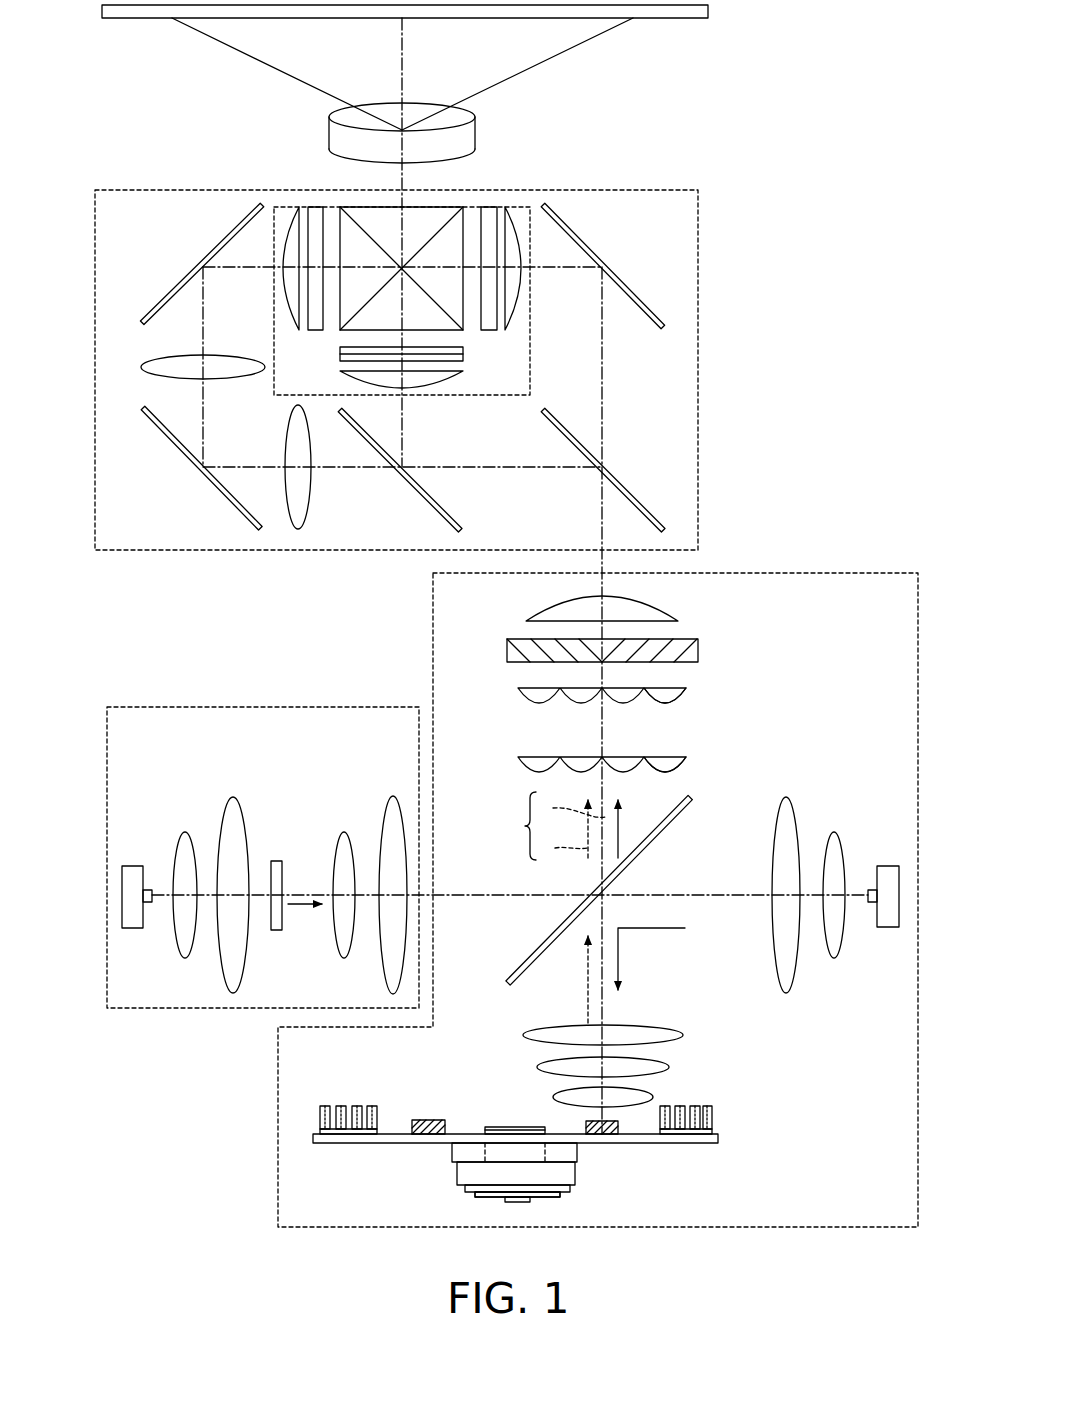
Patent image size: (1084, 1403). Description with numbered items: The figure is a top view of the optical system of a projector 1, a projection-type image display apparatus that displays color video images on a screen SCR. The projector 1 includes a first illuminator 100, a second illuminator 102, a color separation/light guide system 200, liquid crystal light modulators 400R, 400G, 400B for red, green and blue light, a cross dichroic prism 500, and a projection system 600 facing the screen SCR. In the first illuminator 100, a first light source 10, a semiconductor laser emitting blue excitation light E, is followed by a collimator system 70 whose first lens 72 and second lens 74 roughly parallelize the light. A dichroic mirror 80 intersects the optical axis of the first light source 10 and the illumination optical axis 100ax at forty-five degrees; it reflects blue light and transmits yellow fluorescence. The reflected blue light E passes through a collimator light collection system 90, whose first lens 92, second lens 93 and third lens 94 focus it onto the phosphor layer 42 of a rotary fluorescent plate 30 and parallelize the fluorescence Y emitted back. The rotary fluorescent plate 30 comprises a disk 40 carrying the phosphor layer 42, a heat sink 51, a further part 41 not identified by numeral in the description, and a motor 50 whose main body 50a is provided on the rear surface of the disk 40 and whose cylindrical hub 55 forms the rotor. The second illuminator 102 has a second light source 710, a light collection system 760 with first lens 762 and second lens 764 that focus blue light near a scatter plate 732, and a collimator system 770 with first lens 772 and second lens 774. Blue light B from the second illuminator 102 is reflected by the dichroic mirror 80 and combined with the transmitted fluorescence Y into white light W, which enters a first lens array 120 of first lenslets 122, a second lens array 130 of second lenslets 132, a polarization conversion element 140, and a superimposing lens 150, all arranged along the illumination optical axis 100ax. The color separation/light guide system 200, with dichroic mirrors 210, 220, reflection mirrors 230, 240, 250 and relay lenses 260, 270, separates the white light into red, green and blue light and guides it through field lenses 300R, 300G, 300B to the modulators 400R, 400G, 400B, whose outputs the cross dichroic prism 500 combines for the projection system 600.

The projector 1 is at (745, 105).
The screen SCR is at (122, 20).
The projection system 600 is at (478, 130).
The cross dichroic prism 500 is at (355, 207).
The liquid crystal light modulator 400B is at (312, 207).
The liquid crystal light modulator 400R is at (488, 207).
The liquid crystal light modulator 400G is at (463, 352).
The field lens 300B is at (290, 207).
The field lens 300R is at (512, 207).
The field lens 300G is at (463, 380).
The color separation/light guide system 200 is at (153, 550).
The dichroic mirror 210 is at (640, 500).
The dichroic mirror 220 is at (425, 500).
The reflection mirror 230 is at (655, 320).
The reflection mirror 240 is at (175, 455).
The reflection mirror 250 is at (150, 317).
The relay lens 260 is at (312, 480).
The relay lens 270 is at (170, 358).
The first illuminator 100 is at (278, 1175).
The illumination optical axis 100ax is at (605, 562).
The superimposing lens 150 is at (538, 610).
The polarization conversion element 140 is at (520, 639).
The second lens array 130 is at (522, 694).
The second lenslet 132 is at (678, 700).
The first lens array 120 is at (522, 764).
The first lenslet 122 is at (678, 768).
The dichroic mirror 80 is at (525, 960).
The collimator system 70 is at (848, 735).
The first lens 72 is at (826, 835).
The second lens 74 is at (776, 800).
The first light source 10 is at (866, 860).
The collimator light collection system 90 is at (770, 1018).
The first lens 92 is at (655, 1093).
The second lens 93 is at (667, 1062).
The third lens 94 is at (680, 1030).
The rotary fluorescent plate 30 is at (467, 1118).
The disk 40 is at (720, 1138).
The reflection layer 41 is at (412, 1130).
The phosphor layer 42 is at (430, 1120).
The heat sink 51 is at (320, 1118).
The hub 55 is at (495, 1127).
The motor 50 is at (466, 1197).
The main body 50a is at (560, 1195).
The second illuminator 102 is at (153, 1010).
The second light source 710 is at (160, 866).
The light collection system 760 is at (235, 760).
The first lens 762 is at (180, 835).
The second lens 764 is at (226, 800).
The scatter plate 732 is at (275, 861).
The collimator system 770 is at (395, 760).
The first lens 772 is at (338, 835).
The second lens 774 is at (388, 800).